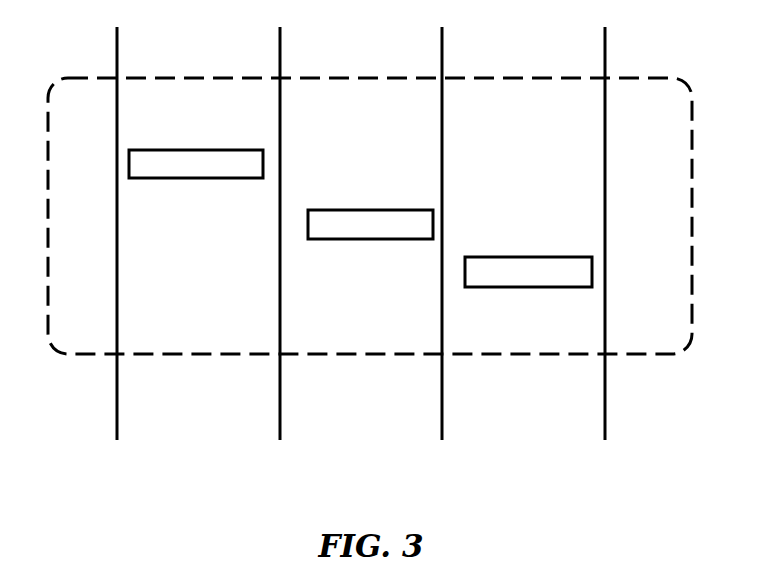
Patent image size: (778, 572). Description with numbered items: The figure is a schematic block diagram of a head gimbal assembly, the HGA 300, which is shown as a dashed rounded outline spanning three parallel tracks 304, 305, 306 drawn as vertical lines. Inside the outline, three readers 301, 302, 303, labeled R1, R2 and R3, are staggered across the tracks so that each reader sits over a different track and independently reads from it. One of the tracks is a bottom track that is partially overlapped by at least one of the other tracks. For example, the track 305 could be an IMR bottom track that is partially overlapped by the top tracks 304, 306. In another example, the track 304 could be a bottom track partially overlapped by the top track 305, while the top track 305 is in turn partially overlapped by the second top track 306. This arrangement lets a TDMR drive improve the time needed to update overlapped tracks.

The HGA 300 is at (660, 78).
The reader 301 is at (191, 150).
The reader 302 is at (374, 210).
The reader 303 is at (523, 257).
The track 304 is at (180, 412).
The track 305 is at (347, 417).
The track 306 is at (504, 417).